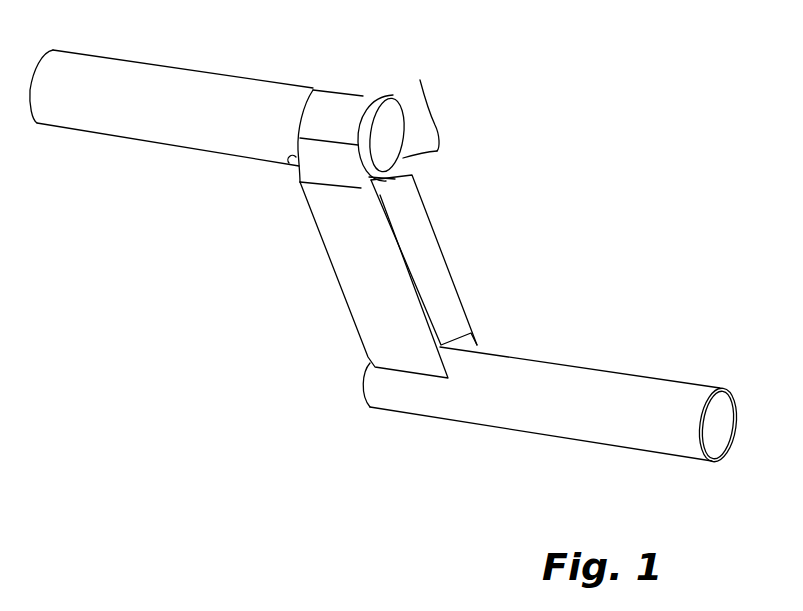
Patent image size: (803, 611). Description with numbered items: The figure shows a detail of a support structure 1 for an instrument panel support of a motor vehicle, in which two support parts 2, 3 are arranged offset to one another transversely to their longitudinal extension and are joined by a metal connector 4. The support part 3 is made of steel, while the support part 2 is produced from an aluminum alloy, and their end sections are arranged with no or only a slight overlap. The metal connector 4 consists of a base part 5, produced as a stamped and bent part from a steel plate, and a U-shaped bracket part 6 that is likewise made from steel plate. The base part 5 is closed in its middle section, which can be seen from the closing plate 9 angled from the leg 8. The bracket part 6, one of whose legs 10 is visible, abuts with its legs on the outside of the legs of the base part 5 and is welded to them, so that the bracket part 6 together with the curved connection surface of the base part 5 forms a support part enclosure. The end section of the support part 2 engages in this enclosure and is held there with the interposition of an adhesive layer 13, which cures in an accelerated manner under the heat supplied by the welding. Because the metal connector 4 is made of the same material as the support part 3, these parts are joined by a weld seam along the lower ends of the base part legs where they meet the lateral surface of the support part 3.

The support structure 1 is at (530, 186).
The support part 2 is at (164, 116).
The support part 3 is at (577, 417).
The metal connector 4 is at (297, 280).
The base part 5 is at (469, 260).
The bracket part 6 is at (315, 109).
The leg 8 is at (367, 287).
The closing plate 9 is at (428, 250).
The leg 10 is at (322, 162).
The adhesive layer 13 is at (398, 163).